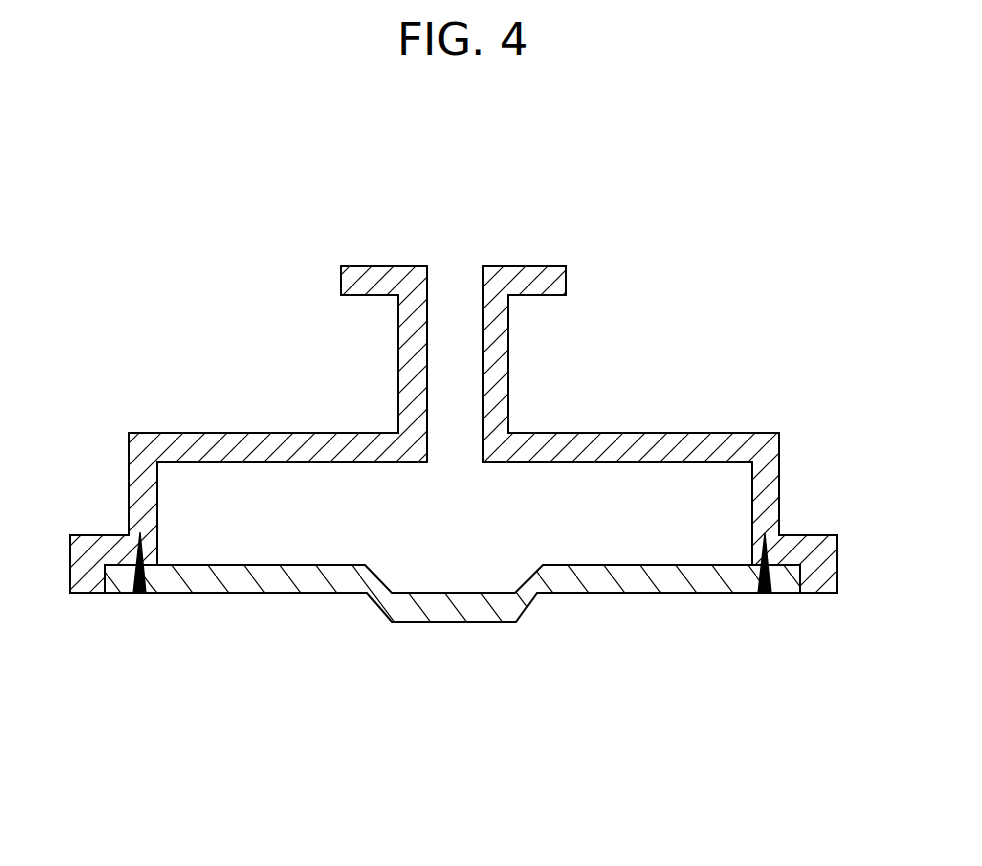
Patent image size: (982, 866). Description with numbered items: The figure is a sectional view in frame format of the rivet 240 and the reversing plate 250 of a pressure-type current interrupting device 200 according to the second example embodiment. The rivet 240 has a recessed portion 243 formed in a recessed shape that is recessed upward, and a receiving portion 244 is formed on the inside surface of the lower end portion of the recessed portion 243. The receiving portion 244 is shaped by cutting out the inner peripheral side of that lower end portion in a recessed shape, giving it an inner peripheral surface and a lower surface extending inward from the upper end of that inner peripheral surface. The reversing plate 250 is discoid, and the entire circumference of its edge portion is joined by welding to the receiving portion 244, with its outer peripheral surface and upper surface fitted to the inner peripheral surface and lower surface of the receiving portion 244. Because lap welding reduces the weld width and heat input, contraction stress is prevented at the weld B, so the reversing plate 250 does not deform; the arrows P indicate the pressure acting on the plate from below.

The pressure-type current interrupting device 200 is at (698, 170).
The rivet 240 is at (690, 353).
The recessed portion 243 is at (502, 450).
The receiving portion 244 is at (121, 570).
The reversing plate 250 is at (602, 612).
The weld B is at (138, 596).
The pressing force P is at (285, 708).